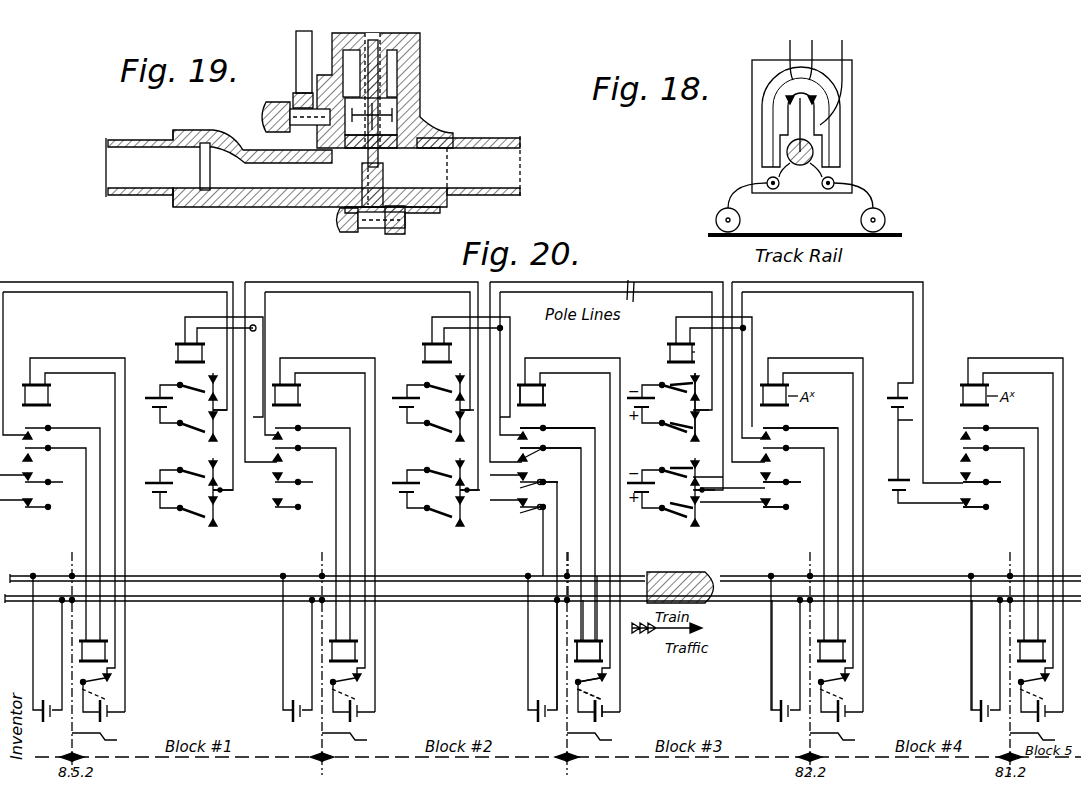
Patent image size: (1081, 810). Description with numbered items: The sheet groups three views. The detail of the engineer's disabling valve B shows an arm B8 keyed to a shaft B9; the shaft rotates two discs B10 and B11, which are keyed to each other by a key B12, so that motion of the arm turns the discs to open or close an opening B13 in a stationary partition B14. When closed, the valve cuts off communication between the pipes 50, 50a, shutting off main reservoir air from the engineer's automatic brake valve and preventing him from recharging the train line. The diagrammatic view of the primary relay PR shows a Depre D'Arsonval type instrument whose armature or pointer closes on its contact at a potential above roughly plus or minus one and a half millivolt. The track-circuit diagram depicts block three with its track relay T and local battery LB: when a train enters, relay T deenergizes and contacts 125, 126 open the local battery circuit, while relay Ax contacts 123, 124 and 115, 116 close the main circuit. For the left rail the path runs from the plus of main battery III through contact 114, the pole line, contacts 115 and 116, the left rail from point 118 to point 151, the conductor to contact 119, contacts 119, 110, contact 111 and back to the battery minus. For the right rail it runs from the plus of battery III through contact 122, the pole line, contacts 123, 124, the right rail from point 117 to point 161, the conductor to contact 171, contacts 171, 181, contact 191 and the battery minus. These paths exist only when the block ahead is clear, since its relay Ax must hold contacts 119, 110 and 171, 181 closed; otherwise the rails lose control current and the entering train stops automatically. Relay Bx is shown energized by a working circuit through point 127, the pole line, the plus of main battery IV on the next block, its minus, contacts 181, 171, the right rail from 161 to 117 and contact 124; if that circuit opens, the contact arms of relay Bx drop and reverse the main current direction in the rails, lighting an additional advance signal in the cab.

In FIG. 19, the engineer's disabling valve B is at (425, 50).
In FIG. 19, the arm B8 is at (350, 80).
In FIG. 19, the shaft B9 is at (264, 116).
In FIG. 19, the disc B10 is at (402, 86).
In FIG. 19, the disc B11 is at (405, 115).
In FIG. 19, the key B12 is at (417, 130).
In FIG. 19, the opening B13 is at (377, 160).
In FIG. 19, the stationary partition B14 is at (370, 170).
In FIG. 19, the pipe 50 is at (497, 157).
In FIG. 19, the pipe 50a is at (138, 153).
In FIG. 18, the primary relay PR is at (793, 137).
In FIG. 20, the relay Ax is at (545, 396).
In FIG. 20, the relay Bx is at (668, 350).
In FIG. 20, the main battery III is at (662, 449).
In FIG. 20, the main battery IV is at (920, 429).
In FIG. 20, the track relay T is at (588, 651).
In FIG. 20, the local battery LB is at (593, 716).
In FIG. 20, the contact 110 is at (869, 498).
In FIG. 20, the contact 111 is at (680, 459).
In FIG. 20, the contact 114 is at (676, 497).
In FIG. 20, the contact 115 is at (524, 451).
In FIG. 20, the contact 116 is at (559, 439).
In FIG. 20, the point 117 is at (715, 608).
In FIG. 20, the point 118 is at (573, 572).
In FIG. 20, the contact 119 is at (870, 518).
In FIG. 20, the contact 122 is at (679, 418).
In FIG. 20, the contact 123 is at (550, 423).
In FIG. 20, the contact 124 is at (679, 417).
In FIG. 20, the contact 125 is at (605, 690).
In FIG. 20, the contact 126 is at (602, 682).
In FIG. 20, the point 127 is at (745, 341).
In FIG. 20, the point 151 is at (787, 567).
In FIG. 20, the point 161 is at (808, 633).
In FIG. 20, the contact 171 is at (903, 552).
In FIG. 20, the contact 181 is at (874, 473).
In FIG. 20, the contact 191 is at (672, 377).